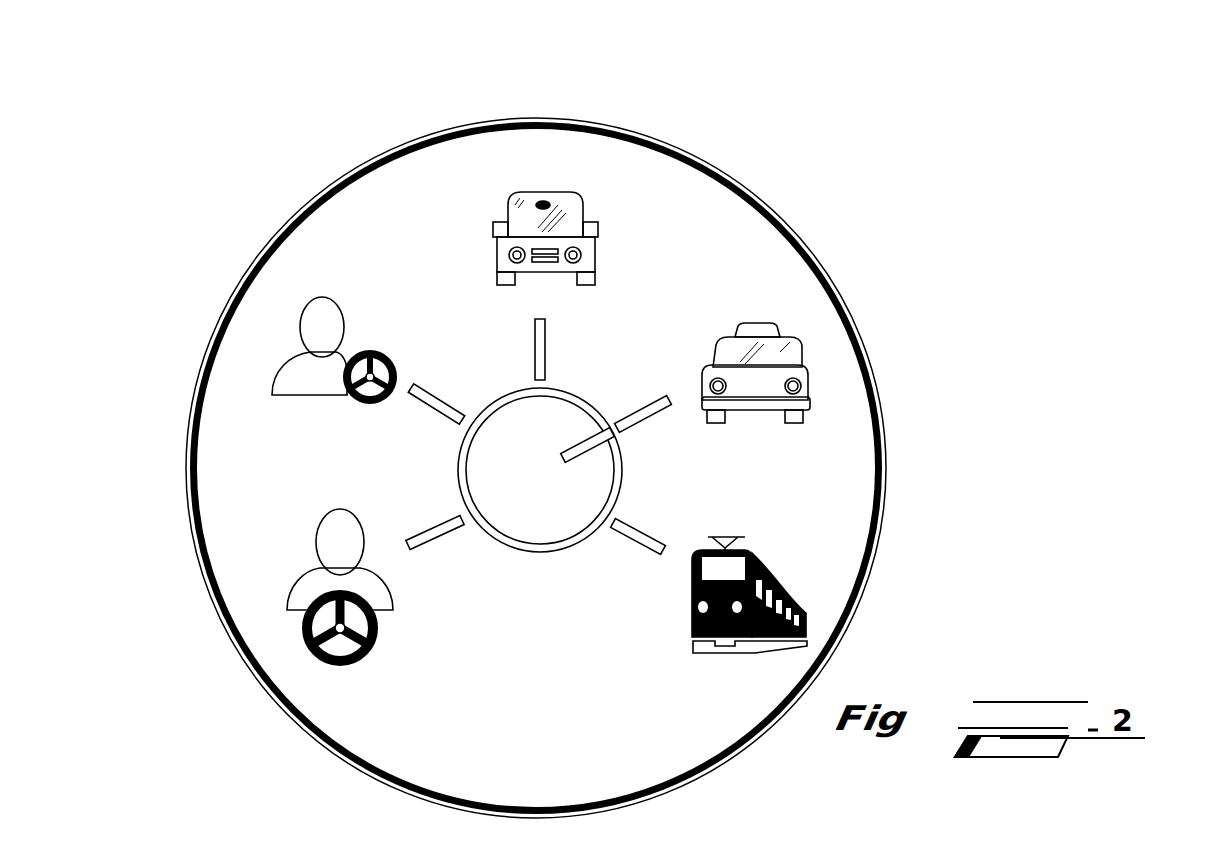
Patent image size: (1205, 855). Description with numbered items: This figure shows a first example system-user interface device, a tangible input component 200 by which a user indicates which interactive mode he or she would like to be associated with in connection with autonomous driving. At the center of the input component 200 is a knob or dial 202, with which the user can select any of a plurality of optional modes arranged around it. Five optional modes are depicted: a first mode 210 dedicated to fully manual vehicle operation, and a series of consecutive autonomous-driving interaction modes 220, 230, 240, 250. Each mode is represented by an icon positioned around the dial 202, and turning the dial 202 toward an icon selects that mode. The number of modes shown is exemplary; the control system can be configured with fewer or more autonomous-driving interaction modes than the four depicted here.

The input component 200 is at (959, 322).
The knob or dial 202 is at (507, 584).
The first mode 210 is at (265, 574).
The autonomous-driving interaction mode 220 is at (380, 303).
The autonomous-driving interaction mode 230 is at (610, 192).
The autonomous-driving interaction mode 240 is at (811, 325).
The autonomous-driving interaction mode 250 is at (799, 571).